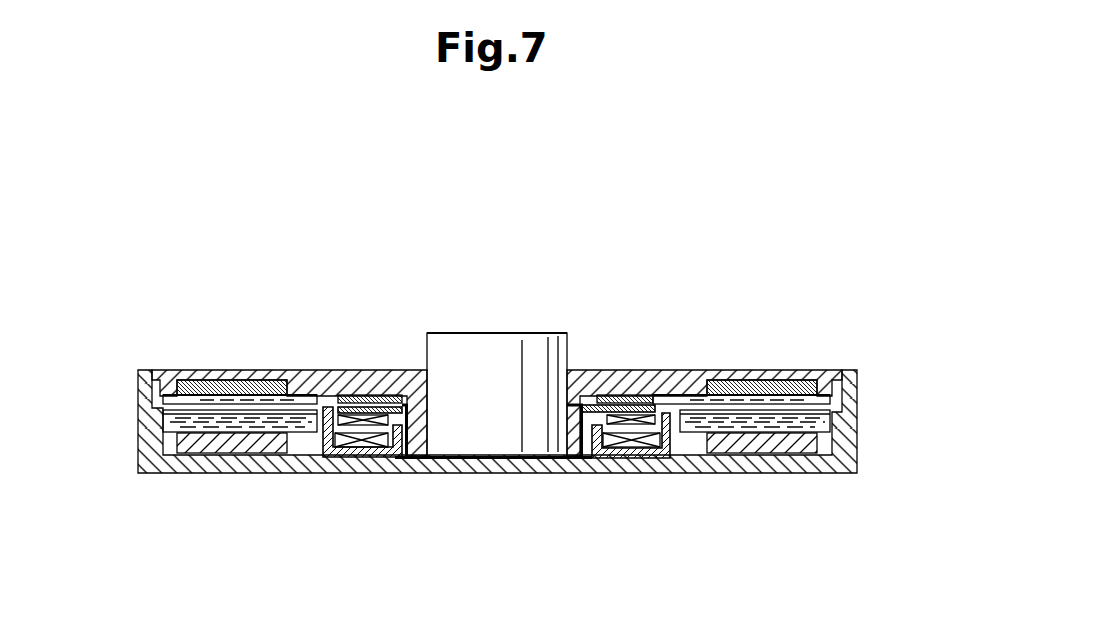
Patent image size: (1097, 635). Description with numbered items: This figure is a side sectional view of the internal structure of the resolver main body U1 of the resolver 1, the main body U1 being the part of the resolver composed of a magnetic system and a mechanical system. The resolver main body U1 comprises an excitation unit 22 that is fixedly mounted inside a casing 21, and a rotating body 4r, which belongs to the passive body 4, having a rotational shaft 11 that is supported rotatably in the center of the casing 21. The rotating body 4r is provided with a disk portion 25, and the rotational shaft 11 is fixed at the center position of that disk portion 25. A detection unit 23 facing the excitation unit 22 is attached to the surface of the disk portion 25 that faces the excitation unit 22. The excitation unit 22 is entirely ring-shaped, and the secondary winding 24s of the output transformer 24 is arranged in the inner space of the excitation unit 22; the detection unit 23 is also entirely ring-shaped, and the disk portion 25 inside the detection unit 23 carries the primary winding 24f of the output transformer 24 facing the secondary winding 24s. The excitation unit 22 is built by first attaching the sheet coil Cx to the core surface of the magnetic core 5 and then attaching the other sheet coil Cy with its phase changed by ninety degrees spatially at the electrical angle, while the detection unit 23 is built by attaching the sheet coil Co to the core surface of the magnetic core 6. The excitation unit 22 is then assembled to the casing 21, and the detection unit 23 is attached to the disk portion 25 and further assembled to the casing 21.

The resolver 1 is at (748, 256).
The resolver main body U1 is at (322, 259).
The passive body 4 is at (702, 353).
The rotating body 4r is at (564, 309).
The magnetic core 5 is at (237, 472).
The magnetic core 6 is at (743, 385).
The rotational shaft 11 is at (475, 333).
The casing 21 is at (691, 473).
The excitation unit 22 is at (171, 466).
The detection unit 23 is at (803, 418).
The output transformer 24 is at (618, 466).
The secondary winding 24s is at (365, 462).
The primary winding 24f is at (633, 393).
The disk portion 25 is at (812, 394).
The sheet coil Co is at (313, 397).
The sheet coil Cx is at (312, 448).
The sheet coil Cy is at (207, 405).